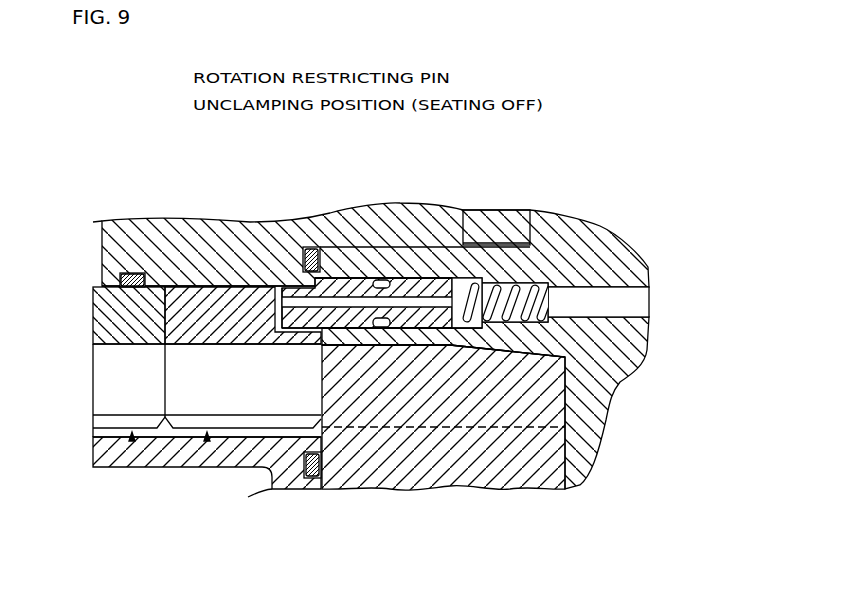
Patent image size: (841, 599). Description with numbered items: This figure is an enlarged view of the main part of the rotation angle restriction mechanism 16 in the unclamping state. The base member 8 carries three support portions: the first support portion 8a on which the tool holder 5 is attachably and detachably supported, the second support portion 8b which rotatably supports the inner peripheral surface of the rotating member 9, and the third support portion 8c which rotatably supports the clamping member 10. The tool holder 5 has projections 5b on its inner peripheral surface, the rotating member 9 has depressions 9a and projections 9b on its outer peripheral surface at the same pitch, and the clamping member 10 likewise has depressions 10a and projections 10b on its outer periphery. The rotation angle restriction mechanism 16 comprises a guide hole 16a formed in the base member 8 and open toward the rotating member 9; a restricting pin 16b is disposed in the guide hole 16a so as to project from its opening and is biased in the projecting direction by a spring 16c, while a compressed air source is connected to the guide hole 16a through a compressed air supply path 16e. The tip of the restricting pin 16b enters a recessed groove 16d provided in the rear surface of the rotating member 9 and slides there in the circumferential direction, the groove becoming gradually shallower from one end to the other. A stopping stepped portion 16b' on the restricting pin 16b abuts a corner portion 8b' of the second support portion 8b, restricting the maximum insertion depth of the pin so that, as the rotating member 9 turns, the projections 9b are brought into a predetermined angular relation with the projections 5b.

The tool holder 5 is at (533, 496).
The projections 5b is at (358, 338).
The base member 8 is at (620, 382).
The first support portion 8a is at (394, 347).
The second support portion 8b is at (208, 225).
The corner portion 8b' is at (425, 211).
The third support portion 8c is at (105, 281).
The rotating member 9 is at (207, 445).
The depressions 9a is at (200, 347).
The projections 9b is at (246, 430).
The clamping member 10 is at (120, 468).
The depressions 10a is at (125, 345).
The projections 10b is at (115, 440).
The rotation angle restriction mechanism 16 is at (564, 210).
The guide hole 16a is at (433, 330).
The restricting pin 16b is at (367, 226).
The stopping stepped portion 16b' is at (291, 220).
The spring 16c is at (547, 287).
The recessed groove 16d is at (285, 331).
The compressed air supply path 16e is at (630, 297).